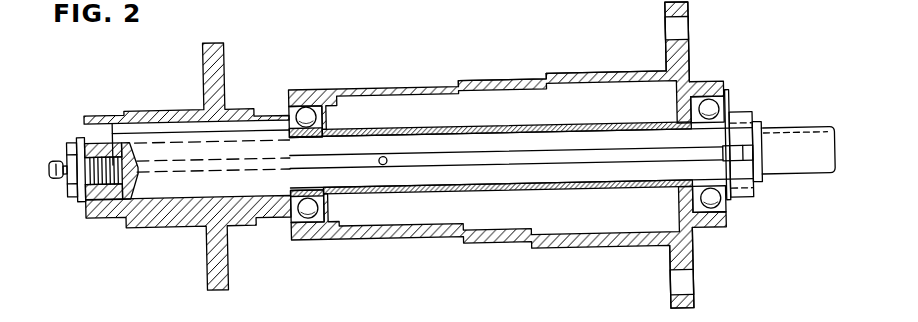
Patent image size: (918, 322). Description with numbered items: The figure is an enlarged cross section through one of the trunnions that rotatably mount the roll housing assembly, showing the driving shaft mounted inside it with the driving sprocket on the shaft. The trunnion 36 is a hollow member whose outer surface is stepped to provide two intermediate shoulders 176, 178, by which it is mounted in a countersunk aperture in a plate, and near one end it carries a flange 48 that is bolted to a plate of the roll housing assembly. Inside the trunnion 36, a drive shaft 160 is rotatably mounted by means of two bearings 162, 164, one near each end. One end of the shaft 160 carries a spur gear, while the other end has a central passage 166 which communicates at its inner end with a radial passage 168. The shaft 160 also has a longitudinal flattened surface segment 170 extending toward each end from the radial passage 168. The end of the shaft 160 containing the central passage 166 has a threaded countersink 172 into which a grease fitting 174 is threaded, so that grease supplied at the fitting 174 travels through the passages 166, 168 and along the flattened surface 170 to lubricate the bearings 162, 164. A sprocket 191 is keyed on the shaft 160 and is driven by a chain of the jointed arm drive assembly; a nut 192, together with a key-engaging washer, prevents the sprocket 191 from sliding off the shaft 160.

The trunnion 36 is at (364, 90).
The flange 48 is at (692, 50).
The drive shaft 160 is at (800, 168).
The bearing 162 is at (292, 108).
The bearing 164 is at (727, 215).
The central passage 166 is at (128, 160).
The radial passage 168 is at (379, 158).
The longitudinal flattened surface segment 170 is at (418, 160).
The threaded countersink 172 is at (110, 128).
The grease fitting 174 is at (58, 156).
The intermediate shoulder 176 is at (455, 83).
The intermediate shoulder 178 is at (528, 75).
The sprocket 191 is at (158, 228).
The nut 192 is at (72, 193).